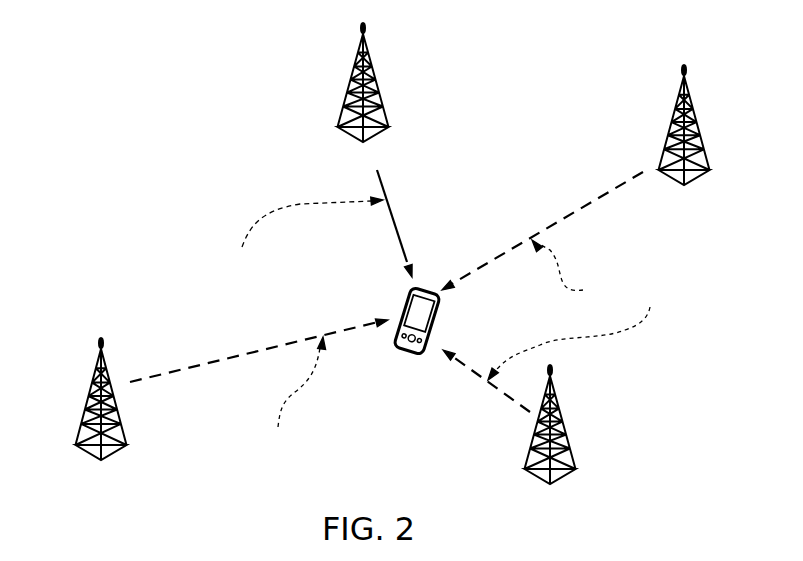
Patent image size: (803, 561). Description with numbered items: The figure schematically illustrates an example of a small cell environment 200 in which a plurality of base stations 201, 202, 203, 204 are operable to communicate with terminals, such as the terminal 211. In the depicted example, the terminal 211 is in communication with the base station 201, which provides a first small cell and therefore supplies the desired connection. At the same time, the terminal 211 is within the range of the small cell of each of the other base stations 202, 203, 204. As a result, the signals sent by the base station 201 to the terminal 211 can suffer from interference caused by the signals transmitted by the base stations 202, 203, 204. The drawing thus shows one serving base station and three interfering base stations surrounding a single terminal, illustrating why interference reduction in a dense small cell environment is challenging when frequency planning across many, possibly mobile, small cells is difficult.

The small cell environment 200 is at (140, 156).
The base station 201 is at (382, 82).
The base station 202 is at (700, 122).
The base station 203 is at (566, 426).
The base station 204 is at (92, 385).
The terminal 211 is at (412, 355).